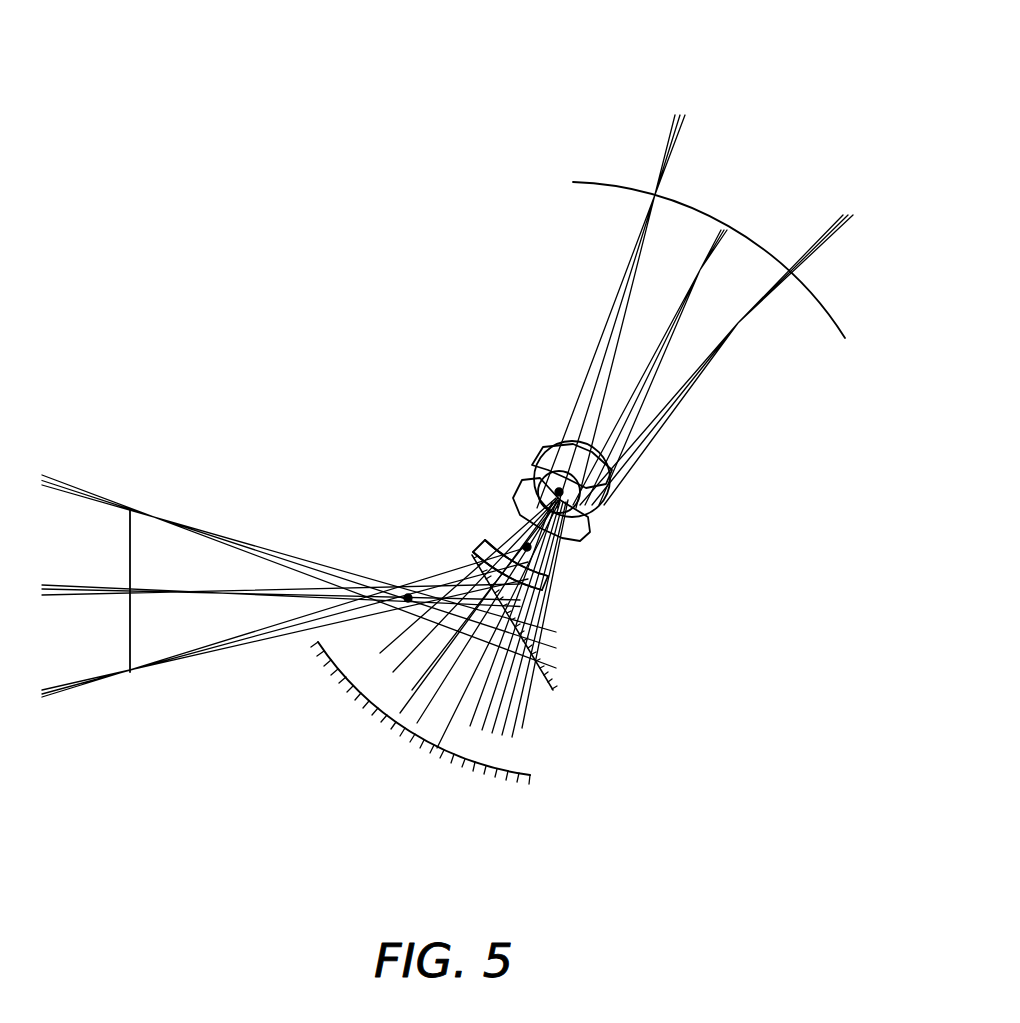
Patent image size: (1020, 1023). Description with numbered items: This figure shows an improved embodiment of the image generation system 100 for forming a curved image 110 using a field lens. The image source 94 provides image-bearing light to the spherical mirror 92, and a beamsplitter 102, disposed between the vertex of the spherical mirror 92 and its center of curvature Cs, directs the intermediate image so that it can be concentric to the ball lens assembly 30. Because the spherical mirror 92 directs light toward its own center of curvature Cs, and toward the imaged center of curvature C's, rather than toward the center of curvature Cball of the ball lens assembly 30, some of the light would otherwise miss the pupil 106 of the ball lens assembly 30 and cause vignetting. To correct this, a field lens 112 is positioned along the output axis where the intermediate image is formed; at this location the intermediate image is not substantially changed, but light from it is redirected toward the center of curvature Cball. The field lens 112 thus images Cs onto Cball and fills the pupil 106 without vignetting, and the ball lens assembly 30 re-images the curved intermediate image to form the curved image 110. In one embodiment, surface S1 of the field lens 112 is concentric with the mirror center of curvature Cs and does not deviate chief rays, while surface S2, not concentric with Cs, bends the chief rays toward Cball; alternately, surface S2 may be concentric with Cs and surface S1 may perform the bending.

The image generation system 100 is at (392, 272).
The curved image 110 is at (578, 182).
The image source 94 is at (128, 560).
The imaged center of curvature C's is at (385, 563).
The spherical mirror 92 is at (366, 704).
The beamsplitter 102 is at (548, 692).
The field lens 112 is at (556, 584).
The surface S1 of field lens S1 is at (540, 598).
The surface S2 of field lens S2 is at (557, 572).
The center of curvature of spherical mirror Cs is at (520, 540).
The pupil of ball lens assembly 106 is at (536, 466).
The ball lens assembly 30 is at (608, 474).
The center of curvature of ball lens assembly Cball is at (572, 494).